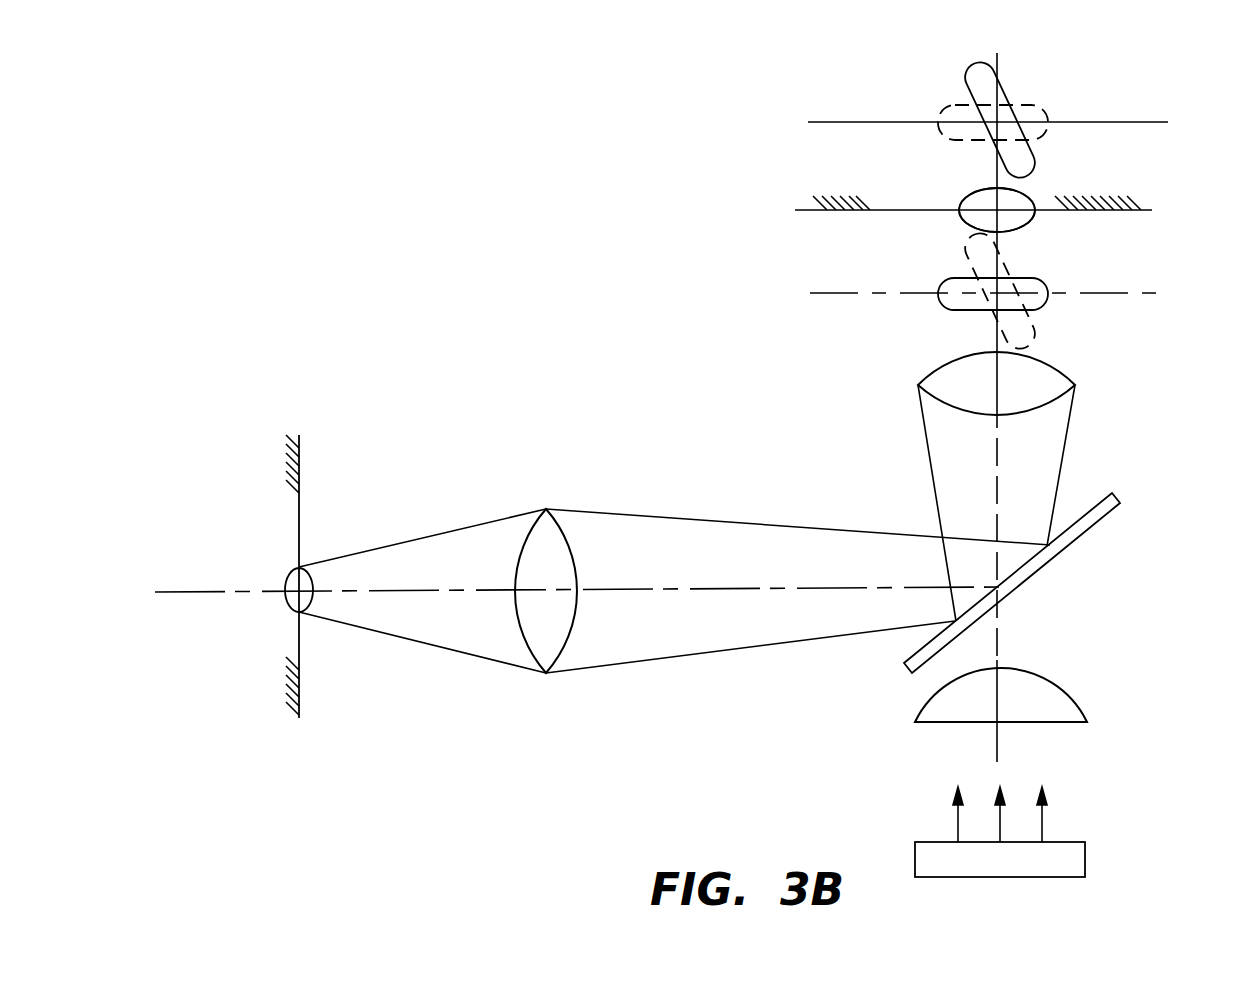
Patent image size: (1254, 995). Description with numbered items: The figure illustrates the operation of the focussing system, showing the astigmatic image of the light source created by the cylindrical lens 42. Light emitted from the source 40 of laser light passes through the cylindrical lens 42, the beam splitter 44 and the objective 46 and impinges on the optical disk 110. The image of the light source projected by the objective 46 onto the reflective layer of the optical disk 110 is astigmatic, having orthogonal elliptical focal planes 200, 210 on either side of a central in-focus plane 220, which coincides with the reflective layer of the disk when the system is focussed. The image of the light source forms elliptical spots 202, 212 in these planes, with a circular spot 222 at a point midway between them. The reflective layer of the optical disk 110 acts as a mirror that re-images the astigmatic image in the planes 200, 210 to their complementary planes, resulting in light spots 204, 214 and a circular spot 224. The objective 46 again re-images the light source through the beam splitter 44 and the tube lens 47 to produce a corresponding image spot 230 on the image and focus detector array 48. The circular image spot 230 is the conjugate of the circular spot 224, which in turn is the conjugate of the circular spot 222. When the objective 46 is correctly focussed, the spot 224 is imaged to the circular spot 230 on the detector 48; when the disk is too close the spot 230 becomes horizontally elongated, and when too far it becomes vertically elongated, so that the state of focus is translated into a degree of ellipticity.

The source of laser light 40 is at (1087, 860).
The cylindrical lens 42 is at (1066, 692).
The beam splitter 44 is at (1092, 530).
The objective 46 is at (1055, 364).
The tube lens 47 is at (546, 675).
The image and focus detector array 48 is at (300, 478).
The optical disk 110 is at (1113, 195).
The elliptical focal plane 200 is at (1130, 122).
The elliptical spot 202 is at (1040, 166).
The light spot 204 is at (1027, 105).
The elliptical focal plane 210 is at (1123, 292).
The elliptical spot 212 is at (1020, 275).
The light spot 214 is at (1033, 325).
The central in-focus plane 220 is at (855, 195).
The circular spot 222 is at (966, 200).
The circular spot 224 is at (966, 229).
The image spot 230 is at (285, 600).